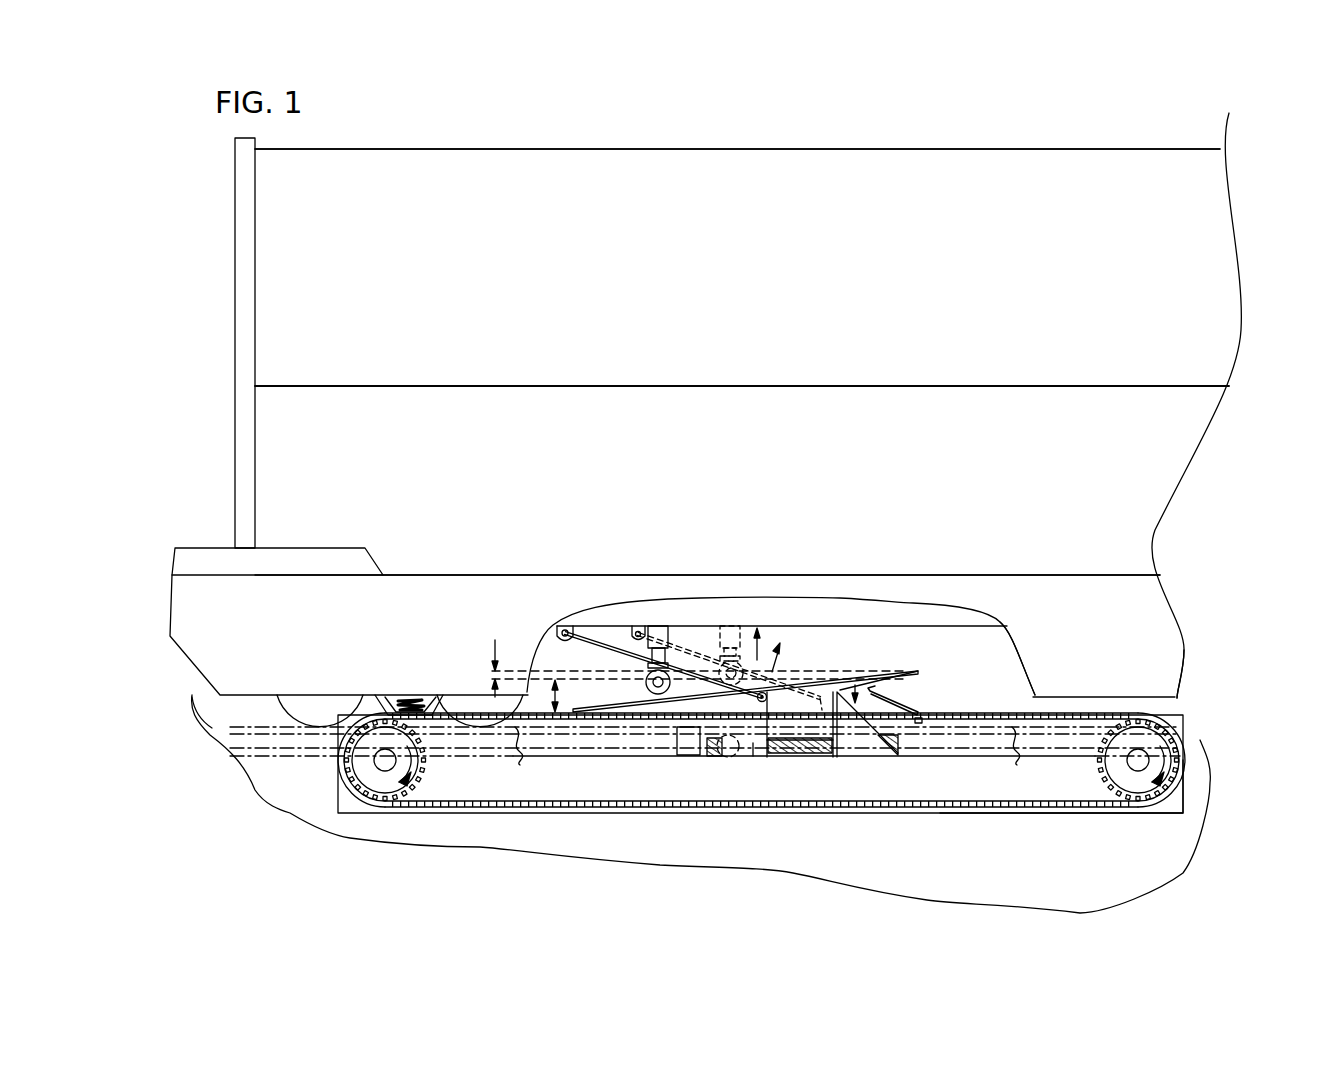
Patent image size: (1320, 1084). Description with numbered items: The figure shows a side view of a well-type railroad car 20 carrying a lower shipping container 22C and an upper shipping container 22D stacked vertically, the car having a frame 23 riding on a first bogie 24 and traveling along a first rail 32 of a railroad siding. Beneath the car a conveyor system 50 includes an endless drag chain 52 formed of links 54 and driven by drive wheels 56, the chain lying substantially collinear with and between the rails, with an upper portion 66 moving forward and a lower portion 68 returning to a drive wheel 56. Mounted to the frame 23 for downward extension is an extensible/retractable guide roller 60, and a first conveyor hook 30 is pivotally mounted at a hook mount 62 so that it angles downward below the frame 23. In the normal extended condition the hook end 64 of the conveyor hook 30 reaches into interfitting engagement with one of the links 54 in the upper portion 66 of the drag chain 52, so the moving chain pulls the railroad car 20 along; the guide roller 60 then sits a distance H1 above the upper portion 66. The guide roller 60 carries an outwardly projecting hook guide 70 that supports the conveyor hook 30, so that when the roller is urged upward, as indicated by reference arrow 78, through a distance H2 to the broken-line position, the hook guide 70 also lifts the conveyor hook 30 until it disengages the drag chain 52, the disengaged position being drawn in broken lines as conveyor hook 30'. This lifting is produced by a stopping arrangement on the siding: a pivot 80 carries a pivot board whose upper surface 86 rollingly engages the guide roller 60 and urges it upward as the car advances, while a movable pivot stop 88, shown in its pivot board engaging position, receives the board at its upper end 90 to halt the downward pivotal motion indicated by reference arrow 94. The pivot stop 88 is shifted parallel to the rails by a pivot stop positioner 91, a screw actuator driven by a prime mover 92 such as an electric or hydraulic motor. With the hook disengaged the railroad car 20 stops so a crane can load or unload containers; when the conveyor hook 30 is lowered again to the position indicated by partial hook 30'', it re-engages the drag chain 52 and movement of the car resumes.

The railroad car 20 is at (170, 592).
The shipping container 22C is at (742, 480).
The shipping container 22D is at (742, 267).
The frame 23 is at (897, 626).
The first bogie 24 is at (396, 695).
The first conveyor hook 30 is at (664, 638).
The conveyor hook raised position 30' is at (727, 645).
The partial hook lowered position 30'' is at (918, 696).
The first rail 32 is at (1198, 718).
The conveyor system 50 is at (463, 895).
The drag chain 52 is at (422, 800).
The links 54 is at (480, 813).
The drive wheels 56 is at (382, 794).
The extensible/retractable guide roller 60 is at (643, 688).
The hook mount 62 is at (553, 630).
The hook end 64 is at (920, 723).
The upper portion 66 is at (1013, 718).
The lower portion 68 is at (990, 800).
The hook guide 70 is at (668, 690).
The reference arrow 78 is at (757, 647).
The pivot 80 is at (740, 747).
The upper surface 86 is at (808, 673).
The movable pivot stop 88 is at (857, 747).
The upper end 90 is at (853, 685).
The pivot stop positioner 91 is at (903, 745).
The prime mover 92 is at (688, 748).
The reference arrow 94 is at (873, 673).
The height H1 is at (553, 684).
The height H2 is at (490, 676).